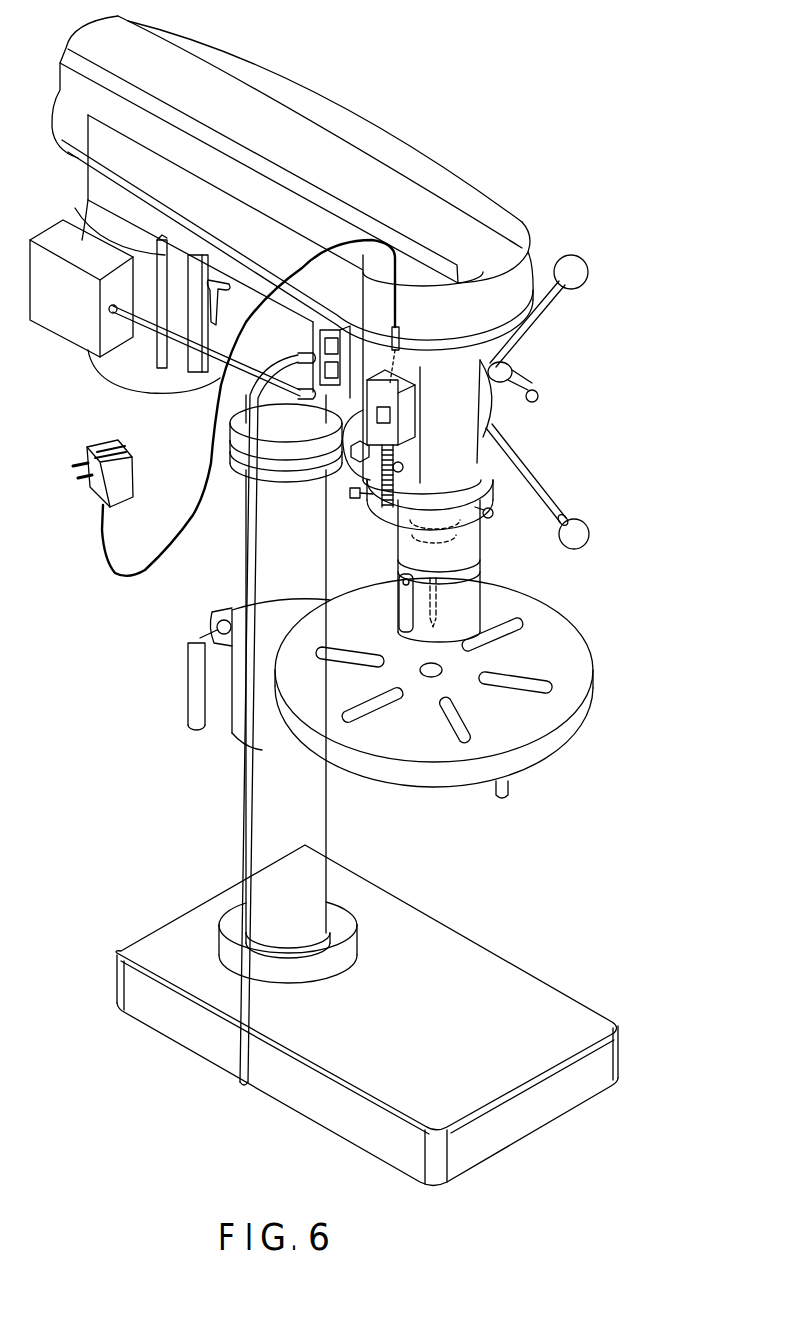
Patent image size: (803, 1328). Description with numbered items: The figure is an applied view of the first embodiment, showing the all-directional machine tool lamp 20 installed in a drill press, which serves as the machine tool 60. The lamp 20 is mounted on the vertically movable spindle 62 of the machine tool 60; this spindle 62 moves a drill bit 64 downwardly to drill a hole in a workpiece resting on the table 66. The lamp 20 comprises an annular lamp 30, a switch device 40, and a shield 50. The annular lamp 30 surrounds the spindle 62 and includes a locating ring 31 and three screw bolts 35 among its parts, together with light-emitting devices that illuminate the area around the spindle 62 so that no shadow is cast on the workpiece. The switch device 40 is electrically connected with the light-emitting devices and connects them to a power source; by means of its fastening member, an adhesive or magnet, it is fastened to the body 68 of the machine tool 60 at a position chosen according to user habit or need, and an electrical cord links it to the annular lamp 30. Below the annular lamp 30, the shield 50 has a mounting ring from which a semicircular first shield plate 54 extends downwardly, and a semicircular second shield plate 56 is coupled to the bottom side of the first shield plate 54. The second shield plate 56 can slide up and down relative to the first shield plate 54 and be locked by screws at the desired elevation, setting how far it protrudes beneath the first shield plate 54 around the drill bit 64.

The machine tool 60 is at (324, 601).
The body 68 is at (460, 387).
The switch device 40 is at (422, 417).
The annular lamp 30 is at (500, 493).
The all-directional machine tool lamp 20 is at (527, 448).
The vertically movable spindle 62 is at (489, 426).
The shield 50 is at (527, 571).
The drill bit 64 is at (437, 605).
The table 66 is at (568, 755).
The screw bolts 35 is at (248, 515).
The locating ring 31 is at (323, 573).
The first shield plate 54 is at (262, 615).
The second shield plate 56 is at (260, 660).